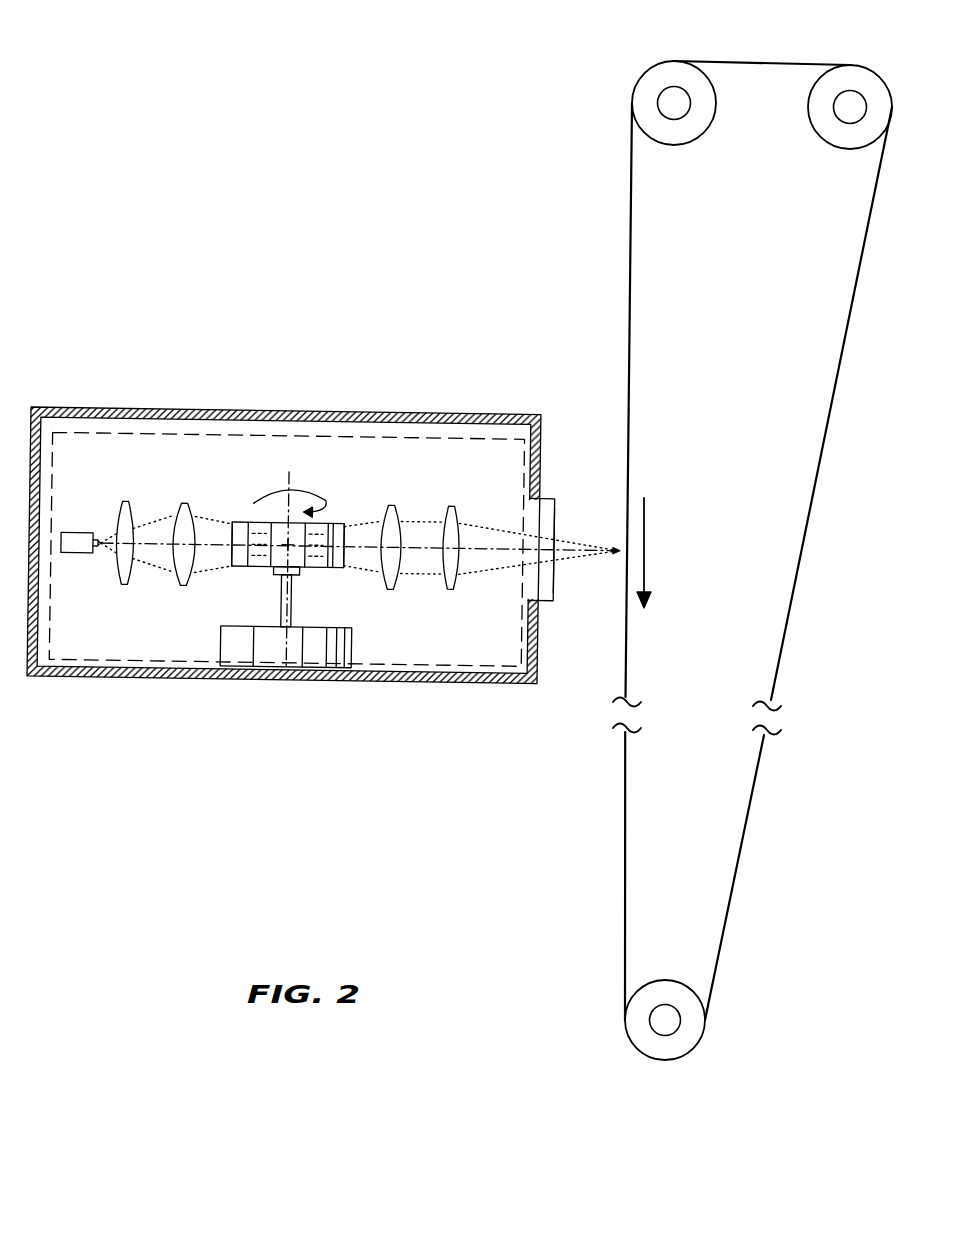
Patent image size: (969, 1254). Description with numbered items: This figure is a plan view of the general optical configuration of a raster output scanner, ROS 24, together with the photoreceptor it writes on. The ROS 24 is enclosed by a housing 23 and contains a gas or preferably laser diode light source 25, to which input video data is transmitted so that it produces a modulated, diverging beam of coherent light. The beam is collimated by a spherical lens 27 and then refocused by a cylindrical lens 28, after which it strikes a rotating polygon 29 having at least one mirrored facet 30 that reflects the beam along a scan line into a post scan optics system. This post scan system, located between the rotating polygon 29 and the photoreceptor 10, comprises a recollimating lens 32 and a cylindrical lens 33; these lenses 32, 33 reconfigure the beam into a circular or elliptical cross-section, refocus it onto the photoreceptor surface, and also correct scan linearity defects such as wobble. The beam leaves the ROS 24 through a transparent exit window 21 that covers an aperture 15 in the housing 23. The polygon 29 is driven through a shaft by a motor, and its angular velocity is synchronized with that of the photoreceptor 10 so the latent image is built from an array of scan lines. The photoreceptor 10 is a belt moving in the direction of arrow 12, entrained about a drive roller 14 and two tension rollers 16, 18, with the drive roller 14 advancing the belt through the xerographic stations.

The photoreceptor 10 is at (823, 445).
The arrow 12 is at (630, 550).
The drive roller 14 is at (850, 73).
The aperture 15 is at (532, 507).
The tension roller 16 is at (666, 1050).
The tension roller 18 is at (676, 73).
The transparent exit window 21 is at (553, 577).
The housing 23 is at (472, 407).
The ROS 24 is at (287, 432).
The laser diode light source 25 is at (78, 531).
The spherical lens 27 is at (127, 498).
The cylindrical lens 28 is at (188, 499).
The rotating polygon 29 is at (270, 478).
The mirrored facet 30 is at (335, 519).
The recollimating lens 32 is at (393, 497).
The cylindrical lens 33 is at (455, 498).